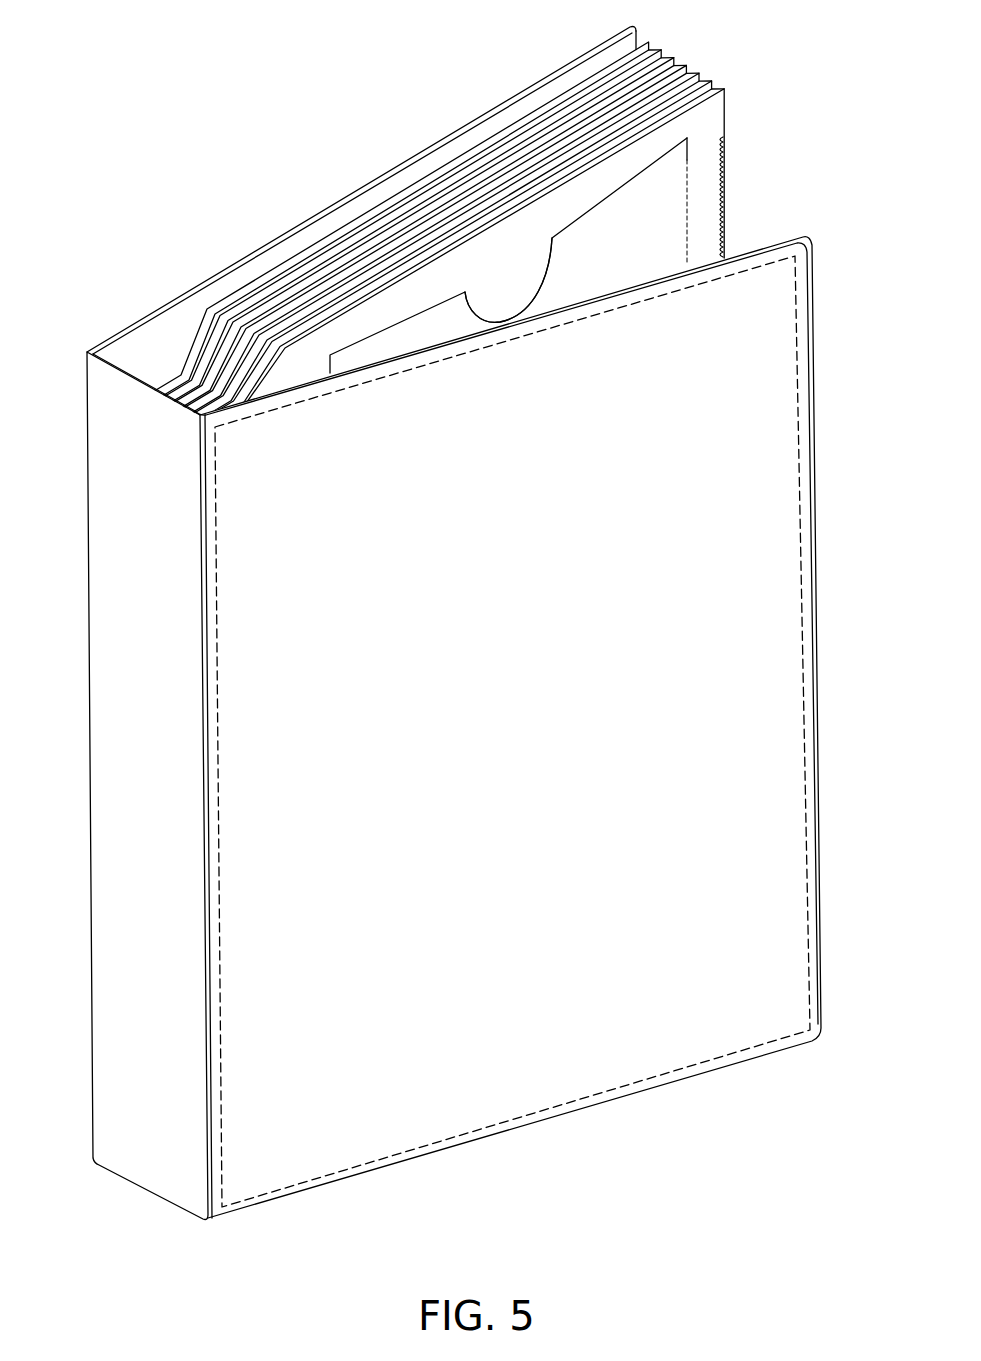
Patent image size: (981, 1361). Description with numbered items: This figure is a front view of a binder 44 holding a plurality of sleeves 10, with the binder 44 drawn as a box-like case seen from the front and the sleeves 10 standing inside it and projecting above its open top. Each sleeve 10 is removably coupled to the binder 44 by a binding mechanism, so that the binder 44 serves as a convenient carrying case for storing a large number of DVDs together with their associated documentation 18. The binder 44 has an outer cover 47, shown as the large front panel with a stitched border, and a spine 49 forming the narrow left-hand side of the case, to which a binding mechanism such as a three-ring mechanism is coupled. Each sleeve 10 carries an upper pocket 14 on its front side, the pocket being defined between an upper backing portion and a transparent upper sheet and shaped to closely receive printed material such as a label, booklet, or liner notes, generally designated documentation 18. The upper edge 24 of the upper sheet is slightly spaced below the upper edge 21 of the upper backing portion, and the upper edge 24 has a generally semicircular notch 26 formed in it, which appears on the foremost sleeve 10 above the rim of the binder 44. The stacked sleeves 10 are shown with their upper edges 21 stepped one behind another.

The sleeve 10 is at (648, 57).
The upper pocket 14 is at (706, 198).
The documentation 18 is at (510, 257).
The upper edge of the upper backing portion 21 is at (408, 305).
The upper edge of the upper sheet 24 is at (371, 340).
The semicircular notch 26 is at (470, 307).
The binder 44 is at (793, 678).
The outer cover 47 is at (725, 1037).
The spine 49 is at (125, 1127).